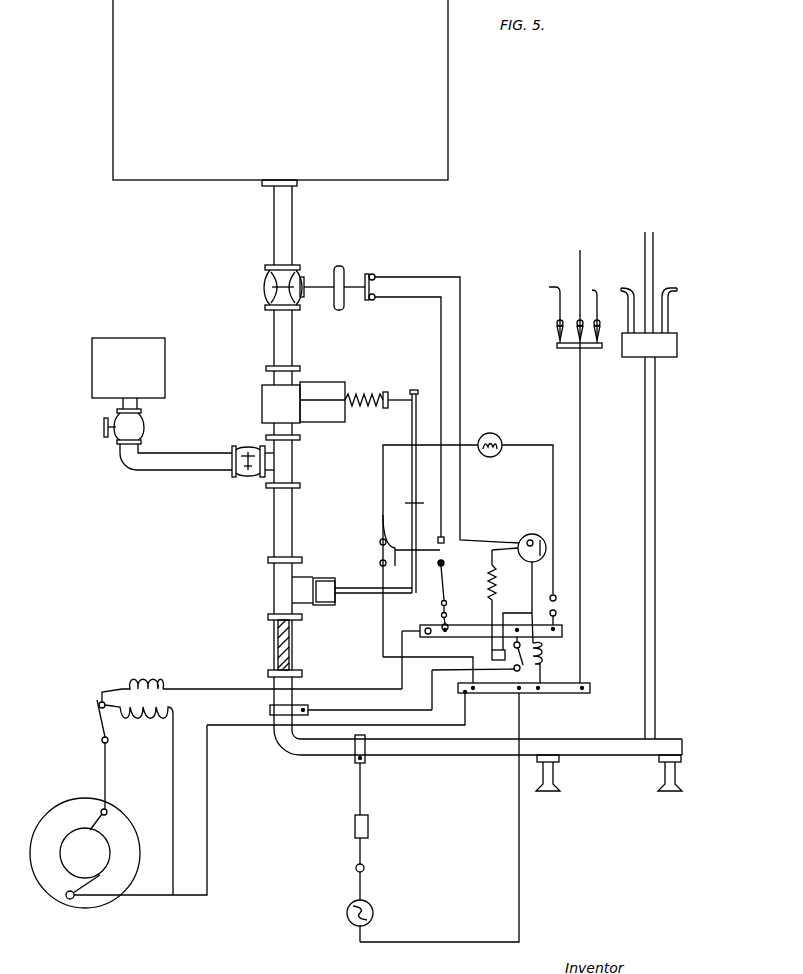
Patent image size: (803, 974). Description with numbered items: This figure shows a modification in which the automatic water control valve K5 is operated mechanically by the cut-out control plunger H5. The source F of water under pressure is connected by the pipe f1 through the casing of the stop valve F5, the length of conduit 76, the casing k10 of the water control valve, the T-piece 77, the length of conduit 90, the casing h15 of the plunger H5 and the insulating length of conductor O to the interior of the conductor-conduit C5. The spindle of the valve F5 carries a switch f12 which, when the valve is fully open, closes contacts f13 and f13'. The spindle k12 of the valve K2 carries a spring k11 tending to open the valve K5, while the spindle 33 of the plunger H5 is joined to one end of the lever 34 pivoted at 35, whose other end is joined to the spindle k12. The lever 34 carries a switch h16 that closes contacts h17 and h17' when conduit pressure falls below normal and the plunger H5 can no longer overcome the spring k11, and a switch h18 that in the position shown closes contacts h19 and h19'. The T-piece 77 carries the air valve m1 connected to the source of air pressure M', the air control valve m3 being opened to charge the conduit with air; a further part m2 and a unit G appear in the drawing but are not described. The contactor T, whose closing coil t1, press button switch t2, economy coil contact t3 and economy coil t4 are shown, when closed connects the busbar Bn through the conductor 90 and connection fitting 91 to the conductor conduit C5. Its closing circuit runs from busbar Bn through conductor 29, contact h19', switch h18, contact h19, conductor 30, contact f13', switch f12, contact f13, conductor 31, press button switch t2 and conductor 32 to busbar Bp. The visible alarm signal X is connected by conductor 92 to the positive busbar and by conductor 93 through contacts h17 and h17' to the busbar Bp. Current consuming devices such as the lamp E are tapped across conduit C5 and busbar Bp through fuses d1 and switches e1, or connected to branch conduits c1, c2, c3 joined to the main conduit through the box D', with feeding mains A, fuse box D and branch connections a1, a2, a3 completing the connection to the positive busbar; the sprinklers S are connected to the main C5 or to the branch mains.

The source of water under pressure F is at (280, 93).
The pipe f1 is at (285, 231).
The stop valve F5 is at (268, 292).
The switch f12 is at (370, 273).
The contact f13 is at (396, 269).
The contact f13' is at (391, 307).
The conductor 31 is at (466, 335).
The conductor 30 is at (441, 357).
The length of conduit 76 is at (292, 330).
The T-piece 77 is at (292, 458).
The length of conduit 90 is at (292, 507).
The automatic water control valve K5 is at (305, 386).
The valve K2 is at (262, 394).
The casing of the water control valve k10 is at (325, 424).
The spring k11 is at (369, 405).
The spindle k12 is at (344, 398).
The lever 34 is at (417, 433).
The pivot 35 is at (412, 503).
The spindle of the plunger 33 is at (356, 594).
The conductor 93 is at (383, 473).
The visible alarm signal X is at (490, 433).
The conductor 92 is at (553, 466).
The switch h16 is at (383, 522).
The contact h17 is at (368, 542).
The contact h17' is at (368, 567).
The switch h18 is at (445, 550).
The contact h19 is at (466, 530).
The contact h19' is at (463, 574).
The conductor 29 is at (449, 592).
The press button switch t2 is at (545, 540).
The conductor 32 is at (540, 570).
The economy coil t4 is at (497, 588).
The economy coil contact t3 is at (492, 655).
The contactor T is at (522, 668).
The closing coil t1 is at (543, 651).
The busbar Bn is at (566, 633).
The positive busbar Bp is at (573, 696).
The insulated feeding mains A is at (582, 600).
The fuse d1 is at (355, 828).
The switch e1 is at (356, 869).
The lamp E is at (347, 915).
The conductor-conduit C5 is at (656, 600).
The sprinklers S is at (656, 790).
The fuse box D is at (572, 357).
The branch connection a1 is at (556, 306).
The branch connection a2 is at (580, 252).
The branch connection a3 is at (603, 280).
The box D' is at (647, 359).
The branch conduit c1 is at (627, 286).
The branch conduit c2 is at (647, 268).
The branch conduit c3 is at (669, 288).
The source of air pressure M' is at (128, 373).
The air control valve m3 is at (117, 441).
The air valve m1 is at (240, 446).
The valve member m2 is at (252, 478).
The cut-out control plunger H5 is at (275, 587).
The casing of the plunger h15 is at (318, 578).
The insulating length of conductor O is at (290, 646).
The connection fitting 91 is at (270, 710).
The generator G is at (118, 793).